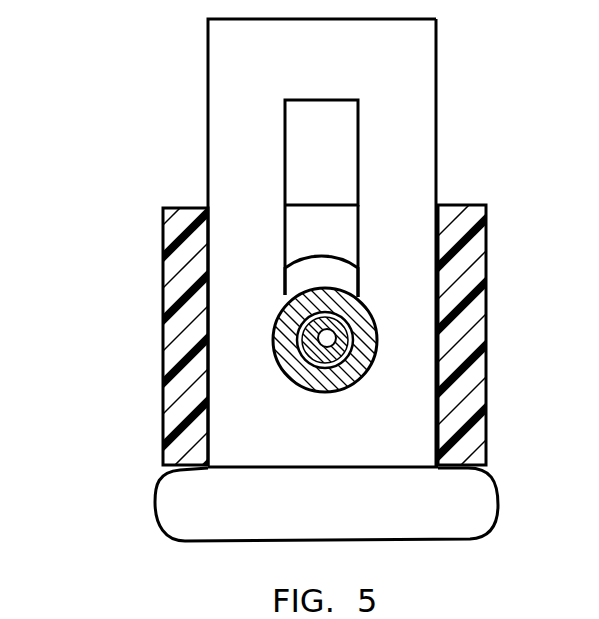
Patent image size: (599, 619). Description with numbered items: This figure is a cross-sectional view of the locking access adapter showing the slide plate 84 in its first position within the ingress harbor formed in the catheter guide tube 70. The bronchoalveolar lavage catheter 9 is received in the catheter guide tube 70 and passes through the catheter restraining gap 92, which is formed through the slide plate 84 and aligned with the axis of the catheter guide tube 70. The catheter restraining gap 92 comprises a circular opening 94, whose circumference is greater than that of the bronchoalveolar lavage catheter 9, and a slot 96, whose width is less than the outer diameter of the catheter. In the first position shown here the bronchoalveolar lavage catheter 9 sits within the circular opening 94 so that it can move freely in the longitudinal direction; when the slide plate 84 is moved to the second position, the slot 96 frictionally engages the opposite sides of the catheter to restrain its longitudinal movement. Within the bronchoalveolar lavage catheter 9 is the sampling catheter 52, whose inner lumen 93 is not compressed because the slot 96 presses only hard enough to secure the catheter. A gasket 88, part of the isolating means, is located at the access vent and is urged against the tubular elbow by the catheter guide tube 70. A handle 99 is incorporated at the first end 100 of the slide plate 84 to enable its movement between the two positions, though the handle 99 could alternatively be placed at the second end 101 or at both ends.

The slide plate 84 is at (408, 40).
The second end 101 is at (397, 82).
The slot 96 is at (323, 152).
The catheter restraining gap 92 is at (283, 386).
The gasket 88 is at (327, 273).
The circular opening 94 is at (280, 323).
The sampling catheter 52 is at (345, 337).
The inner lumen 93 is at (345, 372).
The bronchoalveolar lavage catheter 9 is at (330, 341).
The catheter guide tube 70 is at (167, 442).
The first end 100 is at (388, 440).
The handle 99 is at (176, 512).